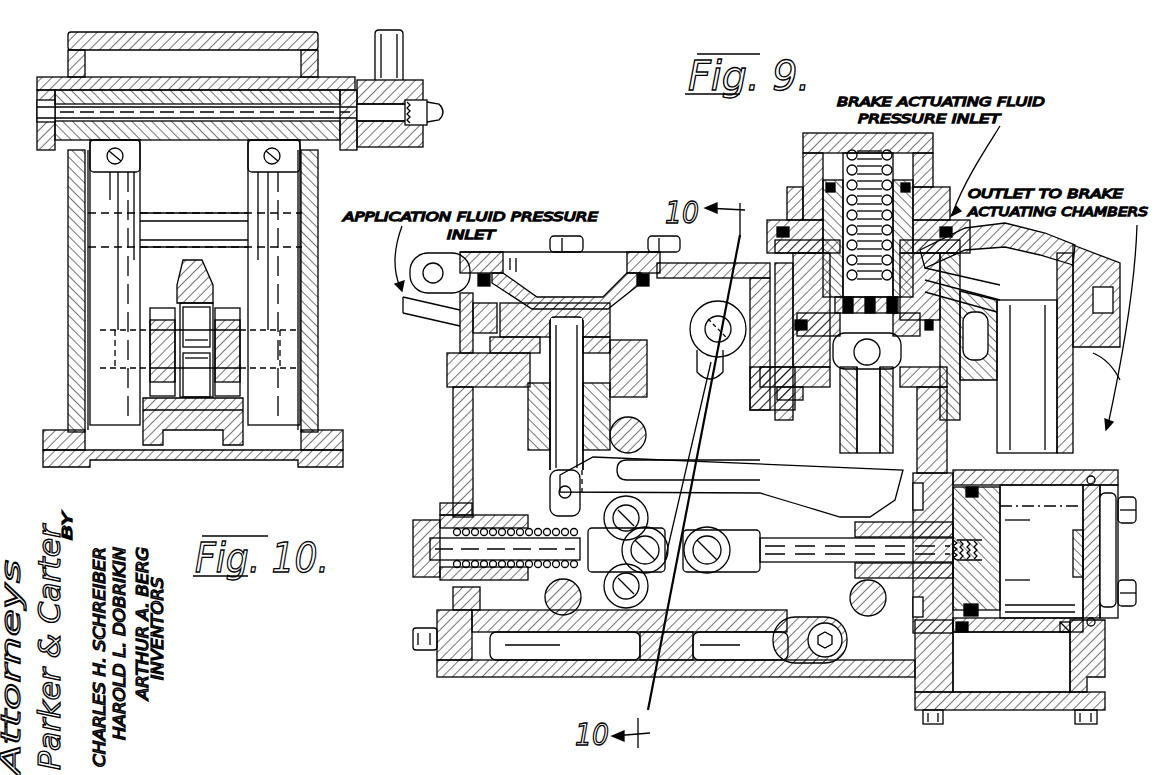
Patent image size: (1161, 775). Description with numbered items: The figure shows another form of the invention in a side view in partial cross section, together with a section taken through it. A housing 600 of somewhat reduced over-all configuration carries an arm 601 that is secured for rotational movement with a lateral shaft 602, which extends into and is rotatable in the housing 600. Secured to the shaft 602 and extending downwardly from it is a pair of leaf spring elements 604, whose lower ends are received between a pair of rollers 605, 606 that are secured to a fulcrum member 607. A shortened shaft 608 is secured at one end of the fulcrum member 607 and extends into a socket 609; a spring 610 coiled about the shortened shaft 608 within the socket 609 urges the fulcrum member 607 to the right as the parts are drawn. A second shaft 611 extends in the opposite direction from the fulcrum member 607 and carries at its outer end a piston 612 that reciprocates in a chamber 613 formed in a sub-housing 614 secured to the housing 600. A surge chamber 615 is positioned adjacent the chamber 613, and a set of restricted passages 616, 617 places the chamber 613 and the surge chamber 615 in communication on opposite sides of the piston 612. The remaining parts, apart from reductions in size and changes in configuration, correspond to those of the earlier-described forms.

In FIG. 10, the housing 600 is at (312, 280).
In FIG. 9, the housing 600 is at (458, 438).
In FIG. 10, the arm 601 is at (400, 50).
In FIG. 9, the arm 601 is at (430, 318).
In FIG. 10, the lateral shaft 602 is at (400, 130).
In FIG. 9, the lateral shaft 602 is at (700, 371).
In FIG. 10, the leaf spring elements 604 is at (293, 394).
In FIG. 9, the leaf spring elements 604 is at (703, 440).
In FIG. 10, the roller 605 is at (313, 323).
In FIG. 9, the roller 605 is at (660, 562).
In FIG. 9, the roller 606 is at (716, 531).
In FIG. 9, the fulcrum member 607 is at (596, 600).
In FIG. 9, the shortened shaft 608 is at (430, 576).
In FIG. 9, the socket 609 is at (457, 530).
In FIG. 9, the spring 610 is at (541, 522).
In FIG. 9, the second shaft 611 is at (782, 565).
In FIG. 9, the piston 612 is at (975, 533).
In FIG. 9, the chamber 613 is at (1128, 461).
In FIG. 9, the sub-housing 614 is at (1088, 667).
In FIG. 9, the surge chamber 615 is at (1015, 679).
In FIG. 9, the restricted passage 616 is at (963, 632).
In FIG. 9, the restricted passage 617 is at (1066, 633).